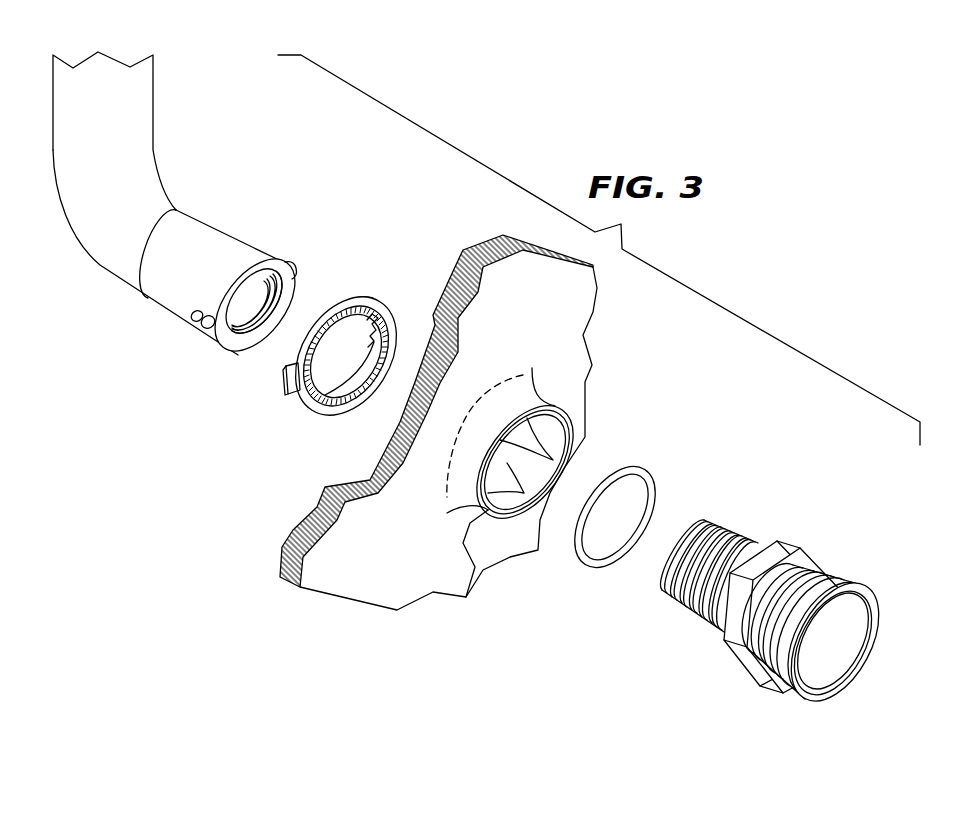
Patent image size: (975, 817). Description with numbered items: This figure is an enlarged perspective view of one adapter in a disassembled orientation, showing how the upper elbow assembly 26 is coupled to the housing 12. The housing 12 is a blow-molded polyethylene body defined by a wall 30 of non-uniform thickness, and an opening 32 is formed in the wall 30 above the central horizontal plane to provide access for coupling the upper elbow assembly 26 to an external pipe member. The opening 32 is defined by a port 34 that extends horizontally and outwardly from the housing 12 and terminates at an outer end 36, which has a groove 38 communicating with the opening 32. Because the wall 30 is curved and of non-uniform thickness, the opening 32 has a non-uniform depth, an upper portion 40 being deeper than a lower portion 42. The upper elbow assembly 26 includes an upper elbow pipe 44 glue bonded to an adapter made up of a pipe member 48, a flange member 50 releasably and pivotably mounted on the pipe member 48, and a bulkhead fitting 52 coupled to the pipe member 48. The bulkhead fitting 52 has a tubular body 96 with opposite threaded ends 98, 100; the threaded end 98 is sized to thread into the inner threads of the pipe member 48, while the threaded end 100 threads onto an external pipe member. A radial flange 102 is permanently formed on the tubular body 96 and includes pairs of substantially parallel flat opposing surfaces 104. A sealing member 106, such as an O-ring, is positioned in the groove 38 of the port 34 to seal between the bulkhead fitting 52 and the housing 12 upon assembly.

The housing 12 is at (463, 465).
The upper elbow assembly 26 is at (186, 212).
The wall 30 is at (360, 528).
The opening 32 is at (516, 522).
The port 34 is at (567, 484).
The outer end 36 is at (566, 438).
The groove 38 is at (497, 426).
The upper portion 40 is at (550, 398).
The lower portion 42 is at (468, 598).
The upper elbow pipe 44 is at (153, 113).
The pipe member 48 is at (237, 238).
The flange member 50 is at (370, 286).
The bulkhead fitting 52 is at (791, 627).
The tubular body 96 is at (757, 538).
The threaded end 98 is at (708, 517).
The threaded end 100 is at (853, 573).
The radial flange 102 is at (769, 623).
The flat opposing surfaces 104 is at (790, 552).
The sealing member 106 is at (592, 574).